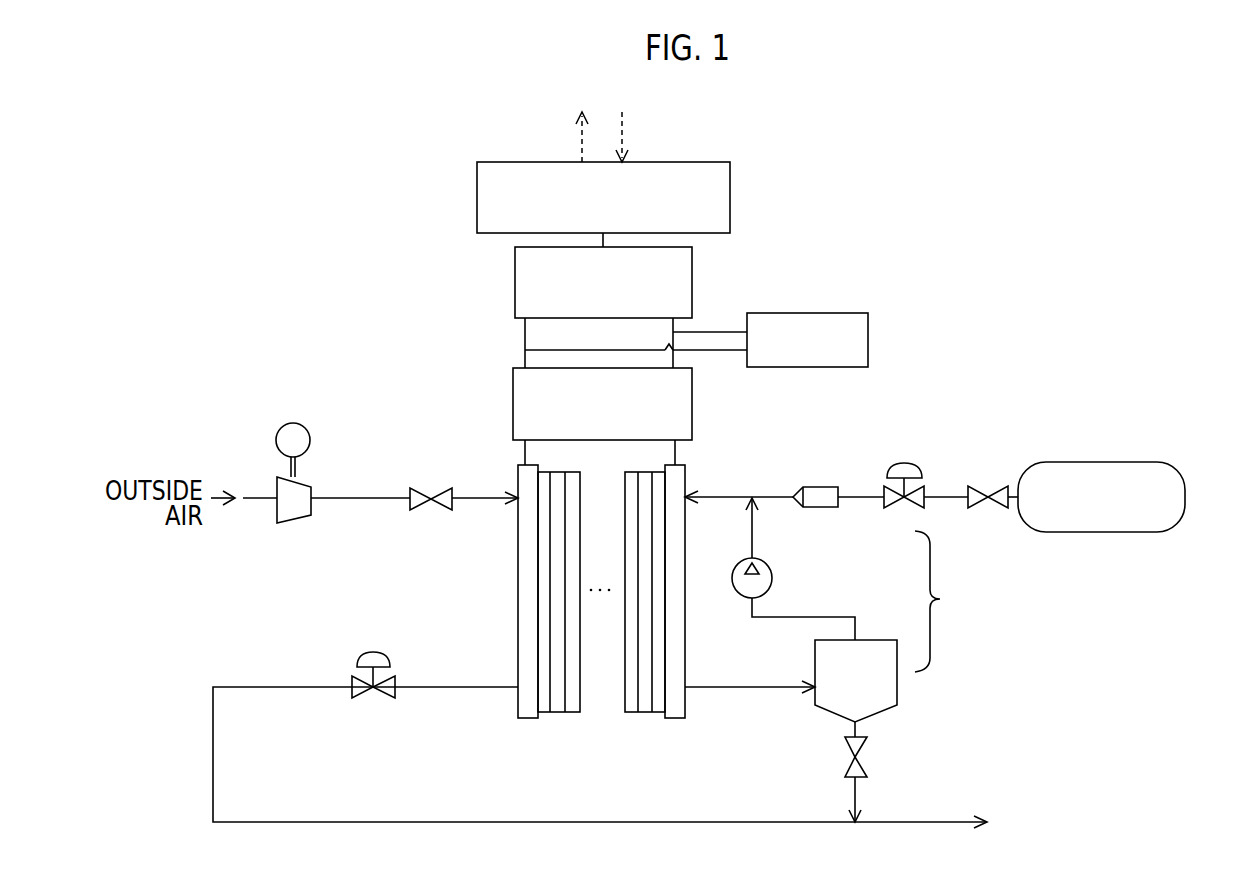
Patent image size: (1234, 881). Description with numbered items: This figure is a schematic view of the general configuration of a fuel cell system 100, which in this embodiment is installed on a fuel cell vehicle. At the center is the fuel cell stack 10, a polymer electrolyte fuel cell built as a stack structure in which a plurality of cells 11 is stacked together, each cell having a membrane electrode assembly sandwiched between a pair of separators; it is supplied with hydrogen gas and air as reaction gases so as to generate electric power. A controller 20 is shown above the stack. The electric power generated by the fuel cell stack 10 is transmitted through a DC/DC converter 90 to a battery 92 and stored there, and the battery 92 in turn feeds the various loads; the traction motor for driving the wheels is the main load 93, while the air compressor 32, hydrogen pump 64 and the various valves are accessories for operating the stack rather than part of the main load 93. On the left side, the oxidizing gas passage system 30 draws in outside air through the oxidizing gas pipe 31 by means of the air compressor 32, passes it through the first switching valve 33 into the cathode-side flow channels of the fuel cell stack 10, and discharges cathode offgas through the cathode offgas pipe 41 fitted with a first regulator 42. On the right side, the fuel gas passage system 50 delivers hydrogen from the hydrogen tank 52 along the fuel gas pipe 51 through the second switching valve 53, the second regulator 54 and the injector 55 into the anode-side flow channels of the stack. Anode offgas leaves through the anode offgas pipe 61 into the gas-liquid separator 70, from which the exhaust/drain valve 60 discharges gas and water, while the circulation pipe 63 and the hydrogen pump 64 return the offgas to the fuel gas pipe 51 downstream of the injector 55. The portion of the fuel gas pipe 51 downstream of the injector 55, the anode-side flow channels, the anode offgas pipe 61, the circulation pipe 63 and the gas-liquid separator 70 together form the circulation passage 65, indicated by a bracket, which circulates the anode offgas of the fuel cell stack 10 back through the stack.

The fuel cell system 100 is at (935, 177).
The fuel cell stack 10 is at (592, 621).
The cells 11 is at (562, 700).
The controller 20 is at (697, 162).
The oxidizing gas passage system 30 is at (172, 428).
The oxidizing gas pipe 31 is at (372, 497).
The air compressor 32 is at (305, 482).
The first switching valve 33 is at (418, 488).
The cathode offgas pipe 41 is at (265, 685).
The first regulator 42 is at (366, 650).
The fuel gas passage system 50 is at (925, 395).
The fuel gas pipe 51 is at (778, 500).
The hydrogen tank 52 is at (1078, 462).
The second switching valve 53 is at (978, 486).
The second regulator 54 is at (906, 463).
The injector 55 is at (825, 486).
The exhaust/drain valve 60 is at (862, 758).
The anode offgas pipe 61 is at (757, 685).
The circulation pipe 63 is at (780, 613).
The hydrogen pump 64 is at (745, 560).
The circulation passage 65 is at (945, 601).
The gas-liquid separator 70 is at (880, 640).
The DC/DC converter 90 is at (692, 398).
The battery 92 is at (692, 281).
The main load 93 is at (830, 313).